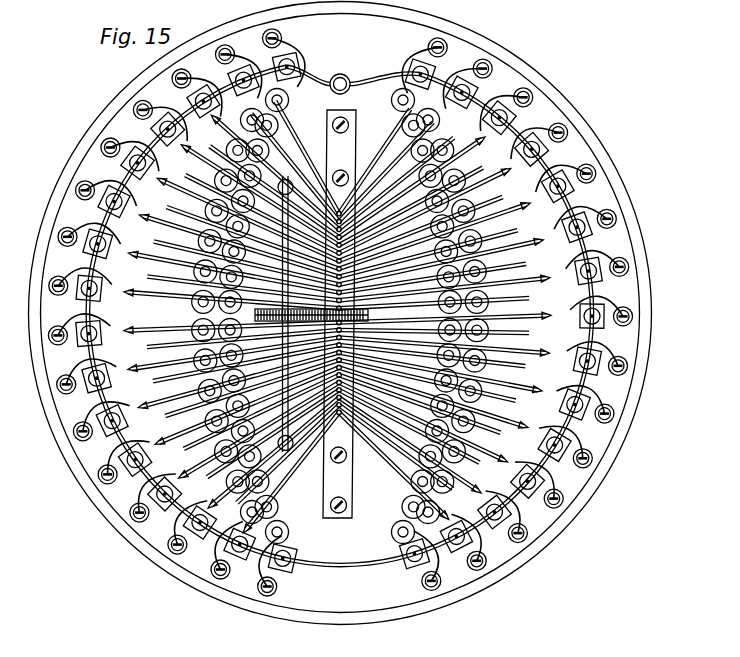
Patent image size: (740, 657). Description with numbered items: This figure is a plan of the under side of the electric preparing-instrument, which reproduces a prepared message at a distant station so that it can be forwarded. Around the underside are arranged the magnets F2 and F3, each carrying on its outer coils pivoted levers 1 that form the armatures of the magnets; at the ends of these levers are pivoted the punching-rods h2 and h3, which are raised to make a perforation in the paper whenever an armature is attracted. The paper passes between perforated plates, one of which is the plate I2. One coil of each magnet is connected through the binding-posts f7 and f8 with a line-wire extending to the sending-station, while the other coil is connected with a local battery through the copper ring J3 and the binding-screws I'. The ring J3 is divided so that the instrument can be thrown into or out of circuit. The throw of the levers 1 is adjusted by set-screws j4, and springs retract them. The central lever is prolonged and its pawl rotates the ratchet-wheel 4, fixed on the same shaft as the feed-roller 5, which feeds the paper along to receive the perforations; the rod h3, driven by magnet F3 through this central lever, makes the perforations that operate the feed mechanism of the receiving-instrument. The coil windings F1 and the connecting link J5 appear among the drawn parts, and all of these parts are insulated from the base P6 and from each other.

The levers 1 is at (339, 315).
The ratchet-wheel 4 is at (311, 306).
The feed-roller 5 is at (280, 304).
The punching-rod h2 is at (381, 293).
The punching-rod h3 is at (352, 311).
The binding-screws I' is at (343, 312).
The perforated plate I2 is at (352, 329).
The inner coil ring F1 is at (340, 316).
The magnet F2 is at (340, 316).
The magnet F3 is at (340, 315).
The binding-post f7 is at (339, 312).
The binding-post f8 is at (641, 313).
The set-screws j4 is at (340, 311).
The copper ring J3 is at (339, 316).
The screw connecting link J5 is at (86, 355).
The base P6 is at (343, 334).